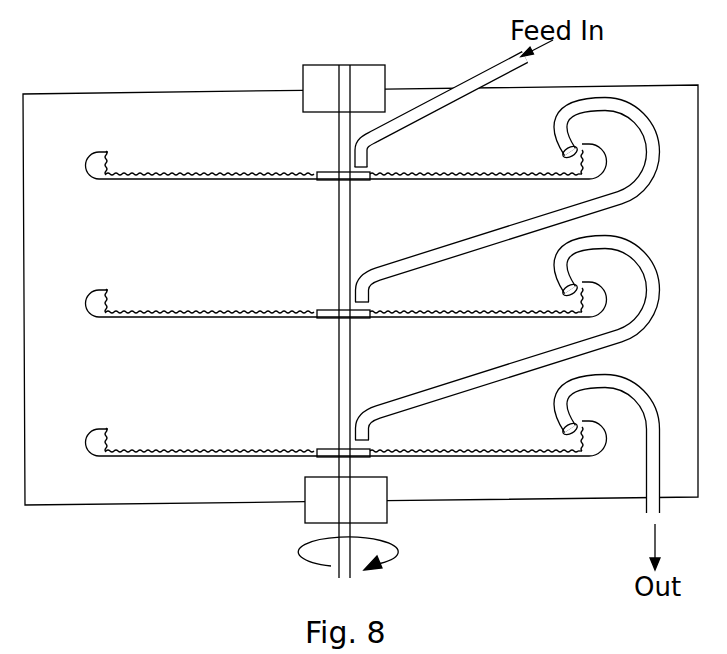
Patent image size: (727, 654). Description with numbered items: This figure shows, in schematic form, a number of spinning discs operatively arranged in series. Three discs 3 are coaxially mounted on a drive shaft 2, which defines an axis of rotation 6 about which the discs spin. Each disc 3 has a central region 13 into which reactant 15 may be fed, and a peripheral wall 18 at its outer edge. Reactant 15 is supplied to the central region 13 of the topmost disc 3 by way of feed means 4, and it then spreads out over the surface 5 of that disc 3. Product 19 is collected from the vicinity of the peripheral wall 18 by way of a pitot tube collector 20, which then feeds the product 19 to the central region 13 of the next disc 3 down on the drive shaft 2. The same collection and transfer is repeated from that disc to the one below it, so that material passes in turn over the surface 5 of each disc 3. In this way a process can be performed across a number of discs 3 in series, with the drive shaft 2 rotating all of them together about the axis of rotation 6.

The drive shaft 2 is at (340, 125).
The disc 3 is at (191, 185).
The feed means 4 is at (500, 63).
The surface 5 is at (148, 175).
The axis of rotation 6 is at (355, 558).
The central region 13 is at (333, 182).
The reactant 15 is at (452, 170).
The peripheral wall 18 is at (97, 152).
The product 19 is at (578, 172).
The pitot tube collector 20 is at (638, 97).